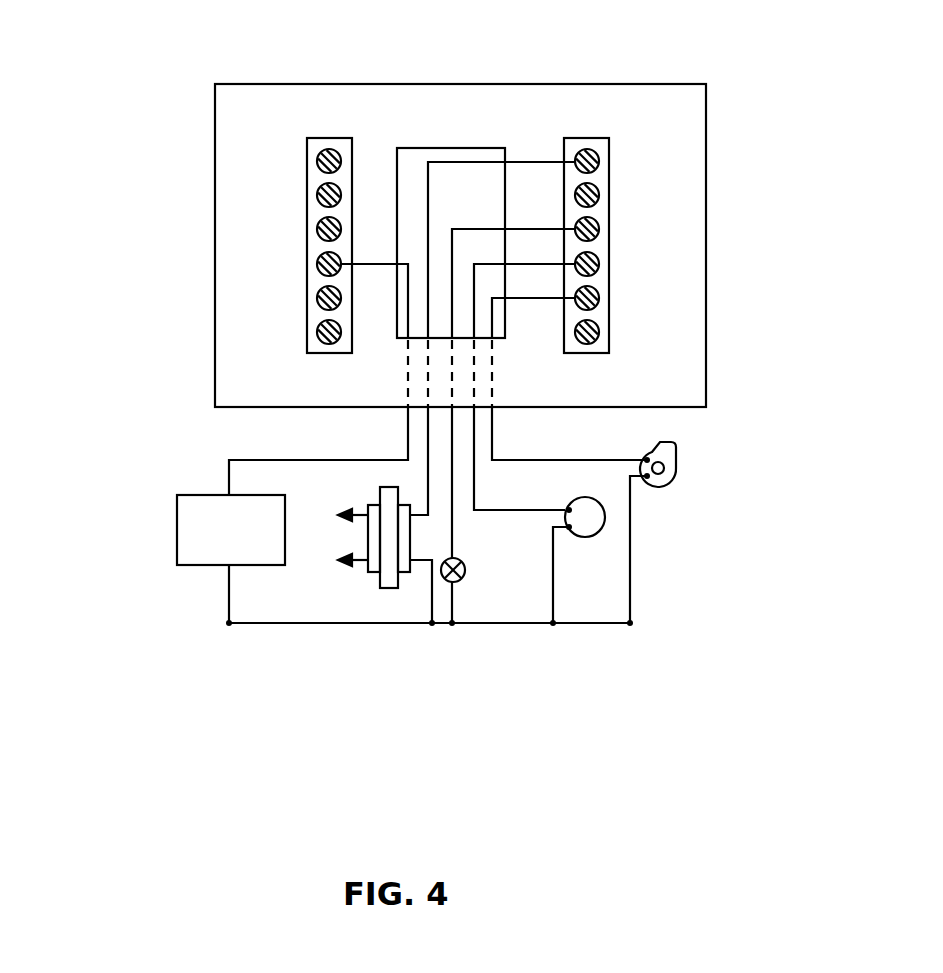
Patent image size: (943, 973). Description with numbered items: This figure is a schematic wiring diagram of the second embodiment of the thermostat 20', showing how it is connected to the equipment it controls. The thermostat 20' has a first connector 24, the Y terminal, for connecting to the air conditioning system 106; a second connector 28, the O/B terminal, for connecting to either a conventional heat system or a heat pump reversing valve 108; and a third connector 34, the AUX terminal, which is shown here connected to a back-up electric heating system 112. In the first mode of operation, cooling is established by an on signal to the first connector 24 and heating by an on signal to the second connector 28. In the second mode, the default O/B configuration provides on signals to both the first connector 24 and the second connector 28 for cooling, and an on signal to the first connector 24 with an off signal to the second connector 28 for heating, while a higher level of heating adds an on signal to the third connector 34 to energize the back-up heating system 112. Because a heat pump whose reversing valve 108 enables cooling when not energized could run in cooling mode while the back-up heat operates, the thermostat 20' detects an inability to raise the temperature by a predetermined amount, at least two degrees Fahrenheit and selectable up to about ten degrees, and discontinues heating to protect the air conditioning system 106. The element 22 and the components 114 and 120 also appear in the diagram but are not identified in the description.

The thermostat 20' is at (350, 313).
The thermostat housing 22 is at (706, 365).
The first connector 24 is at (599, 264).
The second connector 28 is at (597, 220).
The third connector 34 is at (321, 271).
The air conditioning system 106 is at (598, 532).
The heat pump reversing valve 108 is at (460, 582).
The back-up electric heating system 112 is at (200, 563).
The fan 114 is at (676, 482).
The relay 120 is at (370, 572).